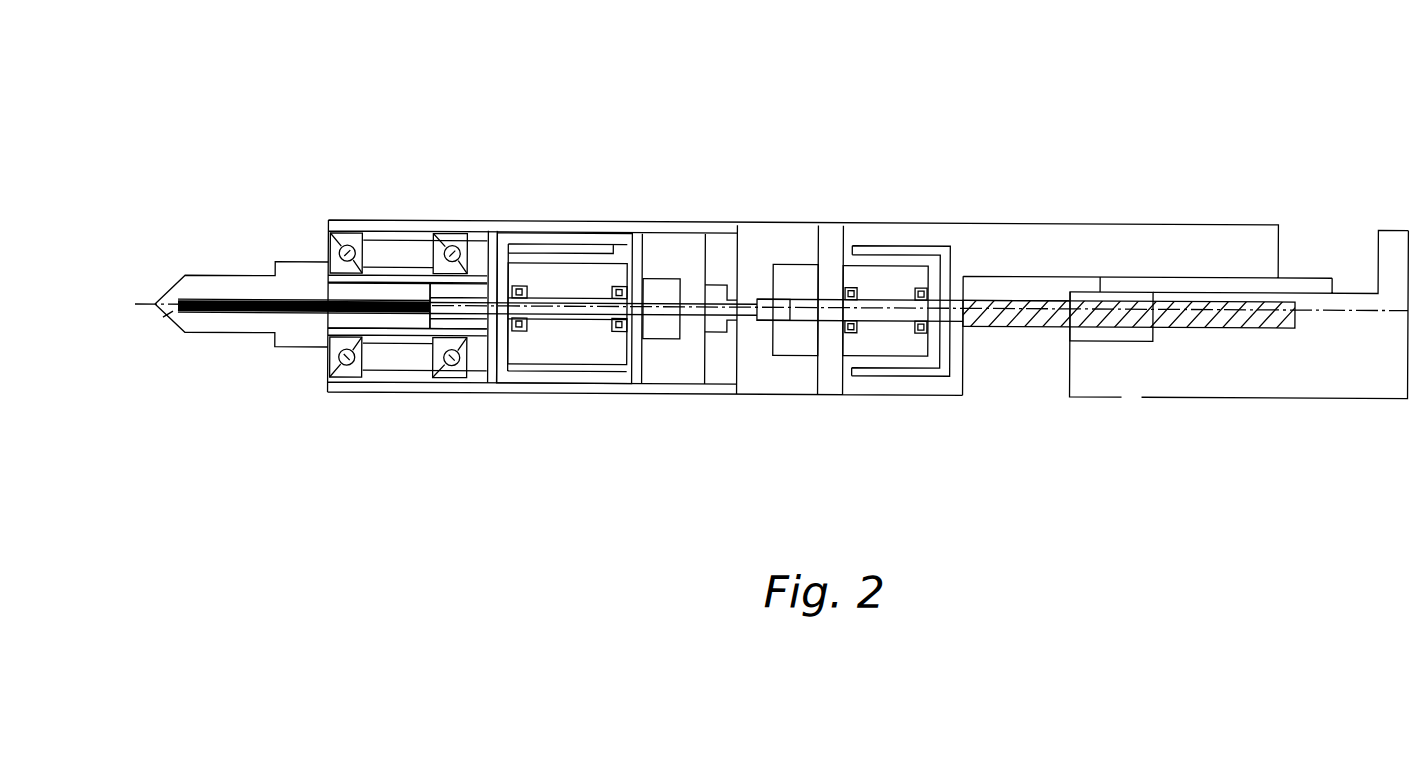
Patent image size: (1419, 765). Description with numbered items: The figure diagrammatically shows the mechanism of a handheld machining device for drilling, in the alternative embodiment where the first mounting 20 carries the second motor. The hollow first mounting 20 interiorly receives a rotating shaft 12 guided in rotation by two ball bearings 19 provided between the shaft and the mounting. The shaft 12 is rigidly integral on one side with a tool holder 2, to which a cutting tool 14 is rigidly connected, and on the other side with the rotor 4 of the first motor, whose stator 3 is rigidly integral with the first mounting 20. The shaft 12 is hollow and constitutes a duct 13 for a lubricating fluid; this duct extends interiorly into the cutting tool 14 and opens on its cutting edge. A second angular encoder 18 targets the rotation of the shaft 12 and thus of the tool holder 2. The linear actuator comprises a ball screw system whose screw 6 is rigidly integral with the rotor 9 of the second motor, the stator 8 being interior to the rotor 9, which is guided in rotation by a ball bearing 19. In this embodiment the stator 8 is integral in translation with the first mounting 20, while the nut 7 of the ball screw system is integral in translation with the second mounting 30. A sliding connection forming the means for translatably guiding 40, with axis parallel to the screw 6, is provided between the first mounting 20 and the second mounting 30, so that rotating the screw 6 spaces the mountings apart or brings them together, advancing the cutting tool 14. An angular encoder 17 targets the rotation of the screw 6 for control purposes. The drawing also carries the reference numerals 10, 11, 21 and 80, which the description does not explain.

The tool holder 2 is at (325, 262).
The stator of the first motor 3 is at (540, 265).
The rotor of the first motor 4 is at (497, 236).
The screw 6 is at (1188, 301).
The nut 7 is at (1120, 326).
The stator of the second motor 8 is at (873, 346).
The rotor of the second motor 9 is at (910, 376).
The shoulder 10 is at (438, 313).
The coupling section 11 is at (1057, 300).
The rotating shaft 12 is at (550, 317).
The duct 13 is at (568, 315).
The cutting tool 14 is at (202, 268).
The angular encoder 17 is at (797, 356).
The second angular encoder 18 is at (662, 274).
The ball bearings 19 is at (452, 221).
The first mounting 20 is at (383, 270).
The needle tip 21 is at (160, 326).
The second mounting 30 is at (1188, 397).
The means for translatably guiding 40 is at (1247, 276).
The shaft section 80 is at (877, 307).